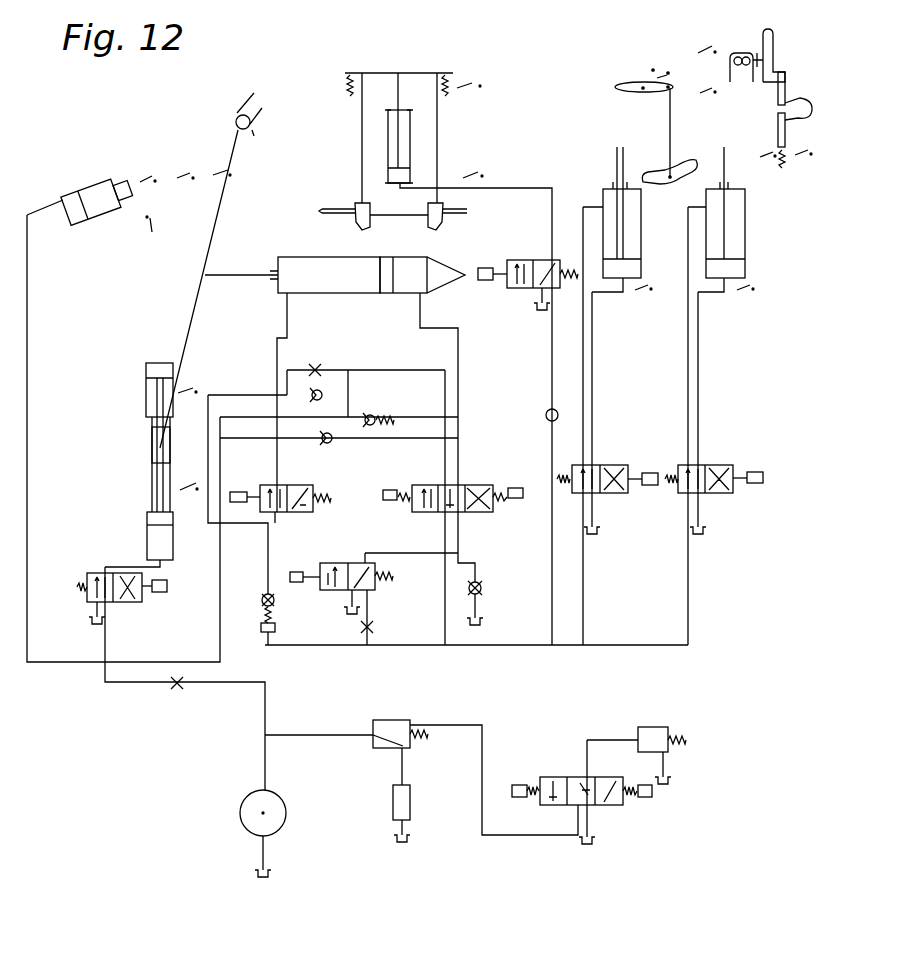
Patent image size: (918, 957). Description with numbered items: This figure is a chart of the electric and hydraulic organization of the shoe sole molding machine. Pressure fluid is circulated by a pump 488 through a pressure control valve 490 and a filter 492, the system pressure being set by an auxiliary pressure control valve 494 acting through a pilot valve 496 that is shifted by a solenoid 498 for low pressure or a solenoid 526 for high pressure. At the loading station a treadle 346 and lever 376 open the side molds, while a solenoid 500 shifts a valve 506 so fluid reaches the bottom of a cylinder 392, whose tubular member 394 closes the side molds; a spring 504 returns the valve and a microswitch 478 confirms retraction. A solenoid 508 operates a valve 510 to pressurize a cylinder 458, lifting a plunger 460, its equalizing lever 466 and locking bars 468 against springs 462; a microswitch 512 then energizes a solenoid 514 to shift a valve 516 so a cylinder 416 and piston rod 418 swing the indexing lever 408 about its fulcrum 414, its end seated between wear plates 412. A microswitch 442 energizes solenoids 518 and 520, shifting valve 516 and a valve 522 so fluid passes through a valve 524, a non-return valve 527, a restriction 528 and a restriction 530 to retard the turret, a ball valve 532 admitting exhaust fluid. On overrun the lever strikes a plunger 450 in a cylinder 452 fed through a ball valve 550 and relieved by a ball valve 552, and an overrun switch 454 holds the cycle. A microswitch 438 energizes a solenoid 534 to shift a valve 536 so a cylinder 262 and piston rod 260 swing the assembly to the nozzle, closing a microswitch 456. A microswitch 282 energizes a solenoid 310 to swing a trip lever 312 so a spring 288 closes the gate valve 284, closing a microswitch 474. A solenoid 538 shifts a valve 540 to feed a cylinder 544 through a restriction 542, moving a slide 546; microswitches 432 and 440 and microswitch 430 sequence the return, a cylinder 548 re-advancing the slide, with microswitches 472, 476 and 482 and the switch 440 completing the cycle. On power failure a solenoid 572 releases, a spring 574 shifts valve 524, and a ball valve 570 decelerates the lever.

The piston rod 260 is at (725, 163).
The cylinder 262 is at (745, 231).
The microswitch 282 is at (765, 162).
The gate valve 284 is at (778, 100).
The spring 288 is at (786, 153).
The solenoid 310 is at (741, 53).
The trip lever 312 is at (774, 40).
The treadle 346 is at (655, 174).
The lever 376 is at (627, 92).
The cylinder 392 is at (641, 215).
The tubular member 394 is at (617, 150).
The lever 408 is at (218, 217).
The wear plates 412 is at (255, 100).
The fulcrum 414 is at (152, 453).
The cylinder 416 is at (343, 294).
The piston rod 418 is at (238, 280).
The microswitch 430 is at (195, 380).
The microswitch 432 is at (190, 498).
The microswitch 438 is at (147, 170).
The microswitch 440 is at (215, 171).
The microswitch 442 is at (185, 160).
The plunger 450 is at (133, 198).
The cylinder 452 is at (98, 183).
The overrun switch 454 is at (145, 234).
The microswitch 456 is at (702, 48).
The cylinder 458 is at (410, 152).
The plunger 460 is at (398, 95).
The springs 462 is at (350, 100).
The equalizing lever 466 is at (420, 73).
The locking bars 468 is at (355, 224).
The microswitch 472 is at (490, 176).
The microswitch 474 is at (810, 160).
The switch 476 is at (705, 102).
The microswitch 478 is at (643, 300).
The switch 482 is at (742, 292).
The pump 488 is at (241, 829).
The pressure control valve 490 is at (390, 720).
The filter 492 is at (393, 811).
The auxiliary pressure control valve 494 is at (653, 727).
The pilot valve 496 is at (549, 777).
The solenoid 498 is at (648, 798).
The solenoid 500 is at (650, 486).
The spring 504 is at (563, 478).
The valve 506 is at (612, 465).
The solenoid 508 is at (486, 281).
The valve 510 is at (527, 289).
The microswitch 512 is at (490, 80).
The solenoid 514 is at (515, 499).
The valve 516 is at (471, 485).
The solenoid 518 is at (392, 490).
The solenoid 520 is at (296, 583).
The valve 522 is at (334, 563).
The valve 524 is at (292, 485).
The solenoid 526 is at (518, 798).
The non-return valve 527 is at (322, 401).
The restriction 528 is at (320, 368).
The restriction 530 is at (373, 627).
The ball valve 532 is at (481, 586).
The solenoid 534 is at (756, 484).
The valve 536 is at (718, 493).
The solenoid 538 is at (168, 589).
The valve 540 is at (127, 603).
The restriction 542 is at (177, 690).
The cylinder 544 is at (146, 390).
The slide 546 is at (168, 451).
The cylinder 548 is at (147, 550).
The ball valve 550 is at (333, 442).
The ball valve 552 is at (375, 415).
The ball valve 570 is at (264, 597).
The solenoid 572 is at (238, 492).
The spring 574 is at (328, 500).